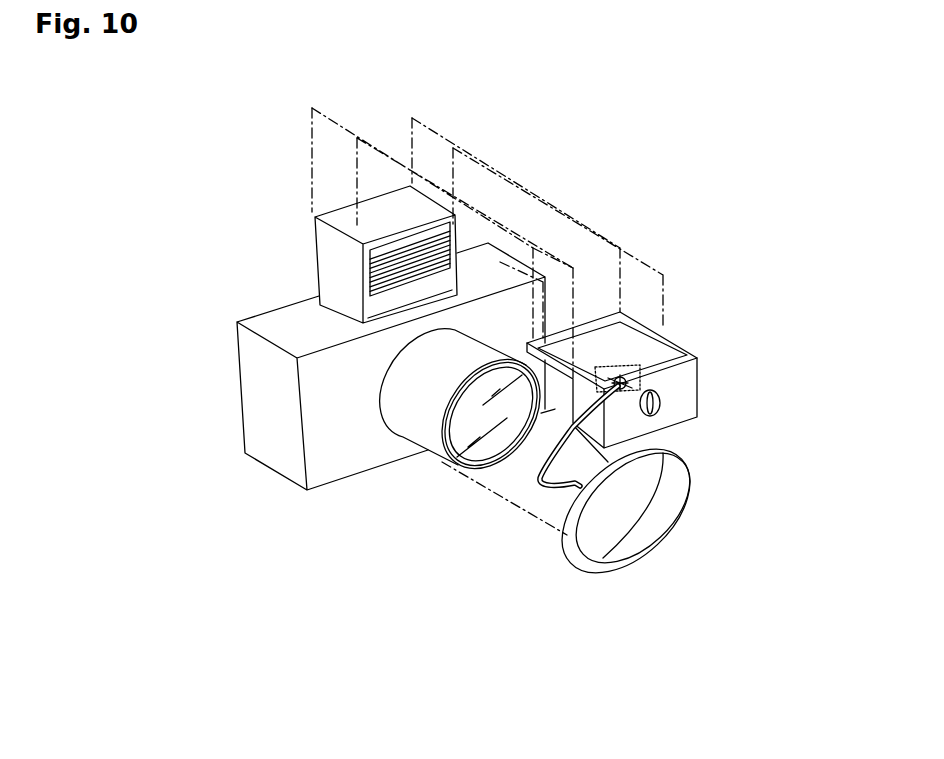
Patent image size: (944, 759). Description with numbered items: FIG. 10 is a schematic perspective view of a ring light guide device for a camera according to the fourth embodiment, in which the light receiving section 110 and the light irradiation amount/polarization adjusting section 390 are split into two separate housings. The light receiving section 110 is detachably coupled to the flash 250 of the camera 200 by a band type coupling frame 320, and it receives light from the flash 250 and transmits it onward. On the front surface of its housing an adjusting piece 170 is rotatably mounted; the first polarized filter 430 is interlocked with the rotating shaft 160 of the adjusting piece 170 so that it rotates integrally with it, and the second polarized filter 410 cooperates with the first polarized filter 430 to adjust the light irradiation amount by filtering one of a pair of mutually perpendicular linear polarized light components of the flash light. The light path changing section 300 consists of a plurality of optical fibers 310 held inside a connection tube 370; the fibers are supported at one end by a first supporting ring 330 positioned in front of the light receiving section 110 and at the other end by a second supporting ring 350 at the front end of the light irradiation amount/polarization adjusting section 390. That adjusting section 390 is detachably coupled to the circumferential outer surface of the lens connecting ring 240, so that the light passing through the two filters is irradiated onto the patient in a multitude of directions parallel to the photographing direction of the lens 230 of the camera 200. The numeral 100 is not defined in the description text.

The control unit 100 is at (700, 362).
The light receiving section 110 is at (700, 382).
The rotating shaft 160 is at (697, 348).
The adjusting piece 170 is at (662, 407).
The camera 200 is at (238, 412).
The lens 230 is at (468, 447).
The lens connecting ring 240 is at (407, 430).
The flash 250 is at (318, 256).
The light path changing section 300 is at (662, 407).
The optical fibers 310 is at (690, 512).
The band type coupling frame 320 is at (620, 325).
The first supporting ring 330 is at (620, 362).
The second supporting ring 350 is at (663, 548).
The connection tube 370 is at (537, 473).
The light irradiation amount/polarization adjusting section 390 is at (606, 574).
The second polarized filter 410 is at (640, 356).
The first polarized filter 430 is at (668, 352).